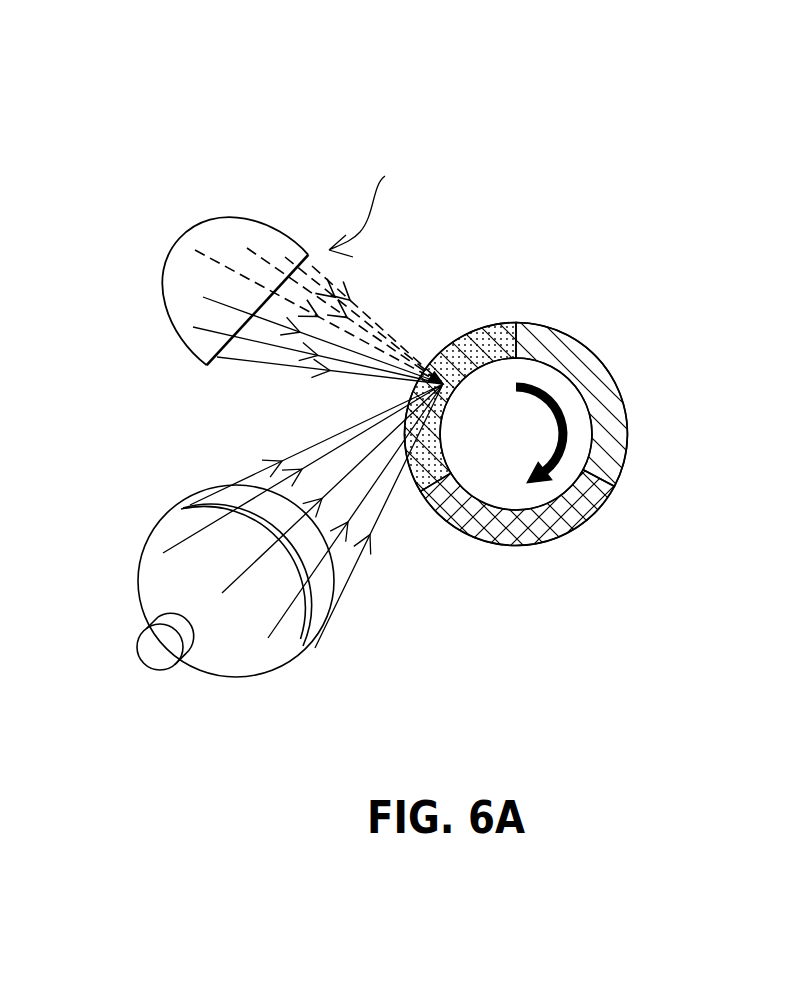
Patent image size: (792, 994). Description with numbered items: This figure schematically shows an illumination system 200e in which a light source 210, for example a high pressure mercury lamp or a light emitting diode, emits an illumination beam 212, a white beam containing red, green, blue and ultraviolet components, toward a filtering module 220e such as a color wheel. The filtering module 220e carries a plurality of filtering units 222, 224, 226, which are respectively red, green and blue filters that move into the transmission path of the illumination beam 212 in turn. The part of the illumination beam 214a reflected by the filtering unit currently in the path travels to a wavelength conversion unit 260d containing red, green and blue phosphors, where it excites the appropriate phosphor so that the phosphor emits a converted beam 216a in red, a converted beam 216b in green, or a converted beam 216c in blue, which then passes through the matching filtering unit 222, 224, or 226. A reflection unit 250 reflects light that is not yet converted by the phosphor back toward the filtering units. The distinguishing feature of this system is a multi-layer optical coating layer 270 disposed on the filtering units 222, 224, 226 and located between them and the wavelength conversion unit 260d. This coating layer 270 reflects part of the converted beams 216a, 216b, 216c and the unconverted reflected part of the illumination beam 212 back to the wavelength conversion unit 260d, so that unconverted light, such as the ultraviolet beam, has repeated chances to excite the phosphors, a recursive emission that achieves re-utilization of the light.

The illumination system 200e is at (593, 595).
The light source 210 is at (237, 648).
The illumination beam 212 is at (353, 573).
The part of the illumination beam 214a is at (248, 357).
The reflection unit 250 is at (285, 292).
The converted beam in the first color 216a is at (222, 266).
The converted beam in the second color 216b is at (267, 262).
The converted beam in the third color 216c is at (360, 303).
The wavelength conversion unit 260d is at (384, 207).
The filtering module 220e is at (596, 384).
The filtering unit 222 is at (505, 322).
The filtering unit 224 is at (603, 408).
The filtering unit 226 is at (537, 522).
The multi-layer optical coating layer 270 is at (470, 350).